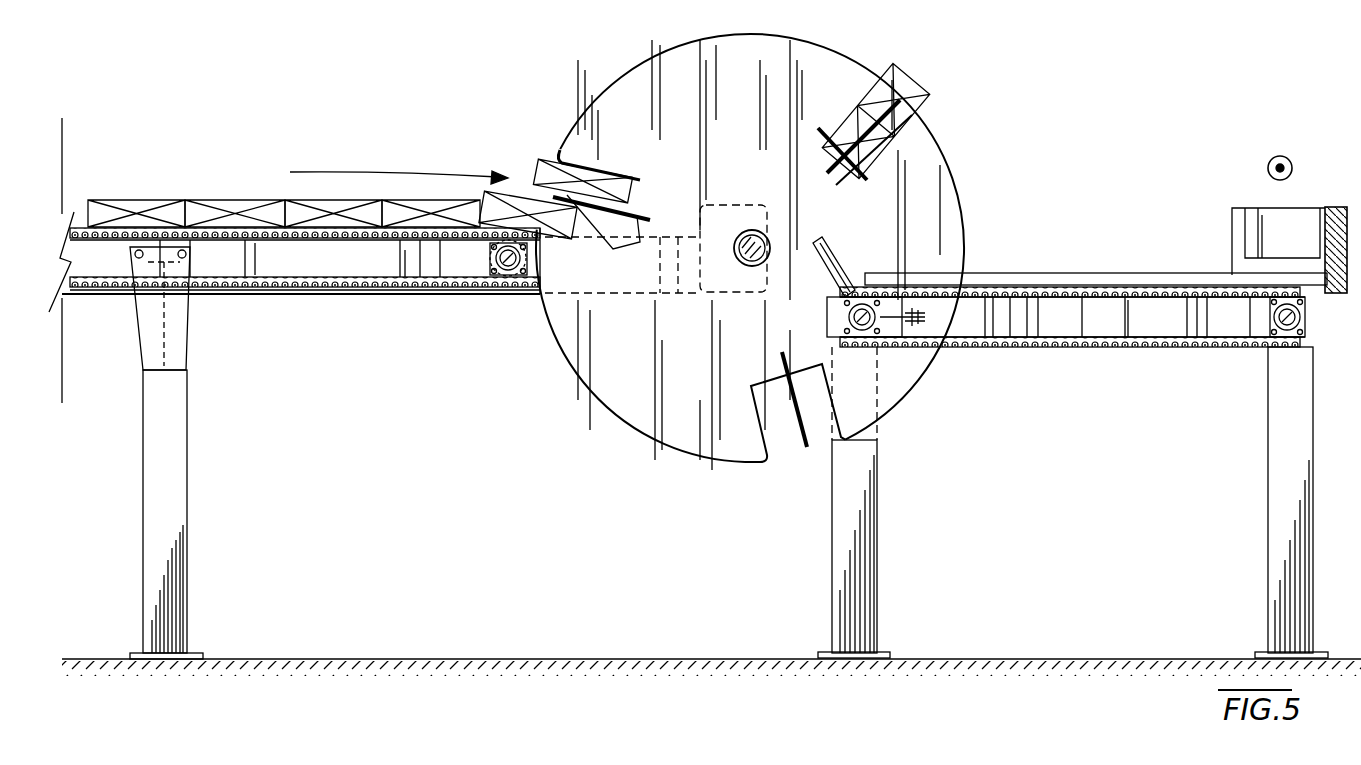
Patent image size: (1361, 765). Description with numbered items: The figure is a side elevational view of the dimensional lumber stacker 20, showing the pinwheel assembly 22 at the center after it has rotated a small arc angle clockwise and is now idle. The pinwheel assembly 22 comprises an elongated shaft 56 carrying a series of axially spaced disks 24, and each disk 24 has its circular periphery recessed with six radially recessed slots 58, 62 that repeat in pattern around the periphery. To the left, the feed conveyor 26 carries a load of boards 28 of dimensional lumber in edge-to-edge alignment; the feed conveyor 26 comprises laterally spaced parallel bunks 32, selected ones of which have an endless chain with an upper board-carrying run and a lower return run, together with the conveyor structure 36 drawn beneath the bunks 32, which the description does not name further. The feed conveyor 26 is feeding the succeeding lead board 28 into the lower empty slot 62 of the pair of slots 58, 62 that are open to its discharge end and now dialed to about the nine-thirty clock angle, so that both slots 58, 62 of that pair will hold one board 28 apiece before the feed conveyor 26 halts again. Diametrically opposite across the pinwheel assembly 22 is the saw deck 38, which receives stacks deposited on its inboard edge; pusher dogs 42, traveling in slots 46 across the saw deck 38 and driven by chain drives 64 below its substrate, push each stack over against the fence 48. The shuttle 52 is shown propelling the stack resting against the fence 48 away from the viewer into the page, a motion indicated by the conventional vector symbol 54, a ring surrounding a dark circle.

The dimensional lumber stacker 20 is at (1112, 90).
The pinwheel assembly 22 is at (618, 62).
The disk 24 is at (738, 240).
The feed conveyor 26 is at (232, 150).
The board 28 is at (150, 205).
The bunk 32 is at (318, 296).
The infeed conveyor chain 36 is at (466, 298).
The saw deck 38 is at (1105, 274).
The pusher dog 42 is at (828, 241).
The slot 46 is at (1085, 298).
The fence 48 is at (1326, 207).
The shuttle 52 is at (1243, 210).
The vector symbol 54 is at (1268, 165).
The shaft 56 is at (592, 163).
The slot 58 is at (598, 202).
The slot 62 is at (610, 246).
The chain drive 64 is at (1000, 348).